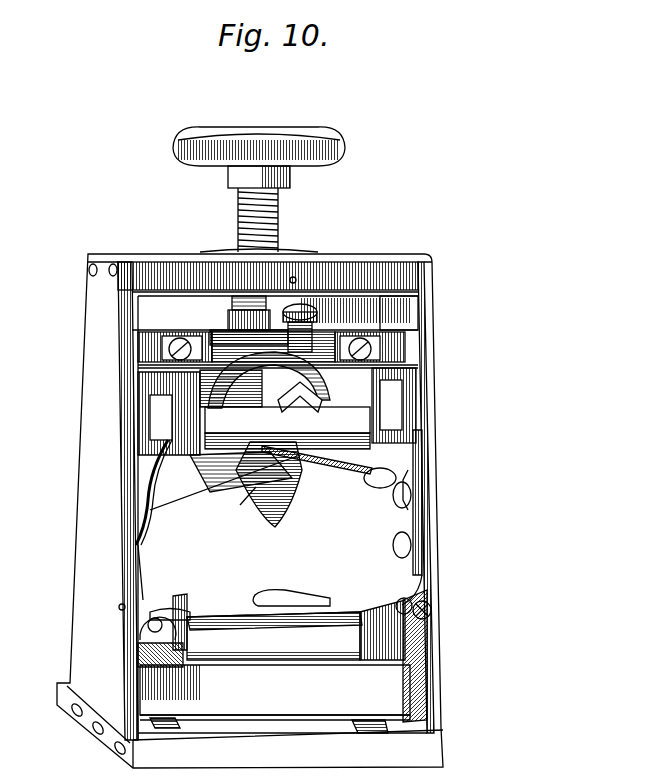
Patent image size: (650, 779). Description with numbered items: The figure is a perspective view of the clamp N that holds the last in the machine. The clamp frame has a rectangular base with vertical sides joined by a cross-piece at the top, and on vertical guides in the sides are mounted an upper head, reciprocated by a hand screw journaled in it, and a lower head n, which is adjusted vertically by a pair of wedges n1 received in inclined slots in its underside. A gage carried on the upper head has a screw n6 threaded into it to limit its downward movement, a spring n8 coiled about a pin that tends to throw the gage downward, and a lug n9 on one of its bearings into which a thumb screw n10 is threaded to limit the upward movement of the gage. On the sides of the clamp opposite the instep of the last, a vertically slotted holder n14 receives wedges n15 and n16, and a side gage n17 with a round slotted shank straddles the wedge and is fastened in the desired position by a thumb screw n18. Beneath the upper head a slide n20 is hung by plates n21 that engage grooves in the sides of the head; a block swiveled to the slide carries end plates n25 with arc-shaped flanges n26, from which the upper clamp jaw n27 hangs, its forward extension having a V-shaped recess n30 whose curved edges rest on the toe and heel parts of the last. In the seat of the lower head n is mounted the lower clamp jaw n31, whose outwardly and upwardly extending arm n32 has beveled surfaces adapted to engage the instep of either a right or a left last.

The clamp N is at (440, 322).
The lower head n is at (269, 382).
The wedges n1 is at (172, 728).
The screw n6 is at (312, 320).
The spring n8 is at (231, 388).
The lug n9 is at (243, 328).
The thumb screw n10 is at (252, 296).
The holder n14 is at (140, 608).
The wedge n15 is at (428, 588).
The wedge n16 is at (138, 558).
The side gage n17 is at (184, 598).
The thumb screw n18 is at (132, 630).
The slide n20 is at (290, 432).
The plates n21 is at (169, 413).
The plates n25 is at (374, 420).
The arc-shaped flanges n26 is at (150, 468).
The upper clamp jaw n27 is at (215, 495).
The V-shaped recess n30 is at (234, 500).
The lower clamp jaw n31 is at (296, 630).
The arm n32 is at (362, 462).